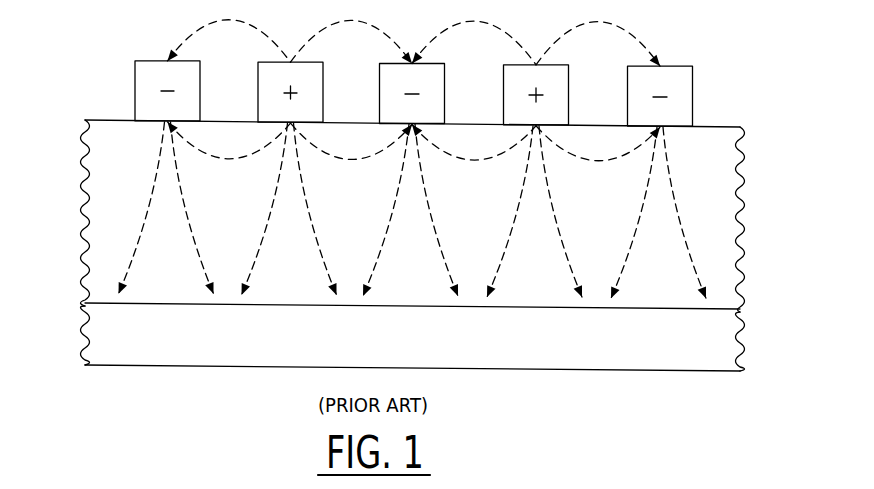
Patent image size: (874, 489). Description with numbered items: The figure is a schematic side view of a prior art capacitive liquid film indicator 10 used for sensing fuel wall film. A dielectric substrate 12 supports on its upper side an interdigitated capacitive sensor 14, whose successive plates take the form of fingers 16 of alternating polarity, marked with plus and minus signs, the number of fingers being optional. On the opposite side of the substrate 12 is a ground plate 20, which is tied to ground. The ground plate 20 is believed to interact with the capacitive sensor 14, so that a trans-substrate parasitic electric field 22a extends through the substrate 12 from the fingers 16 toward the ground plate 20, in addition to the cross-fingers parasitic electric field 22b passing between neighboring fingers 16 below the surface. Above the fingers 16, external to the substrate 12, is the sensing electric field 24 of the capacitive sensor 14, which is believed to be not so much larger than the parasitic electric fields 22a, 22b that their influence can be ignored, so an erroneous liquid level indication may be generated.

The capacitive liquid film indicator 10 is at (455, 245).
The dielectric substrate 12 is at (745, 215).
The interdigitated capacitive sensor 14 is at (462, 82).
The fingers 16 is at (258, 82).
The ground plate 20 is at (743, 338).
The trans-substrate parasitic electric field 22a is at (180, 197).
The cross-fingers parasitic electric field 22b is at (567, 157).
The sensing electric field 24 is at (265, 33).